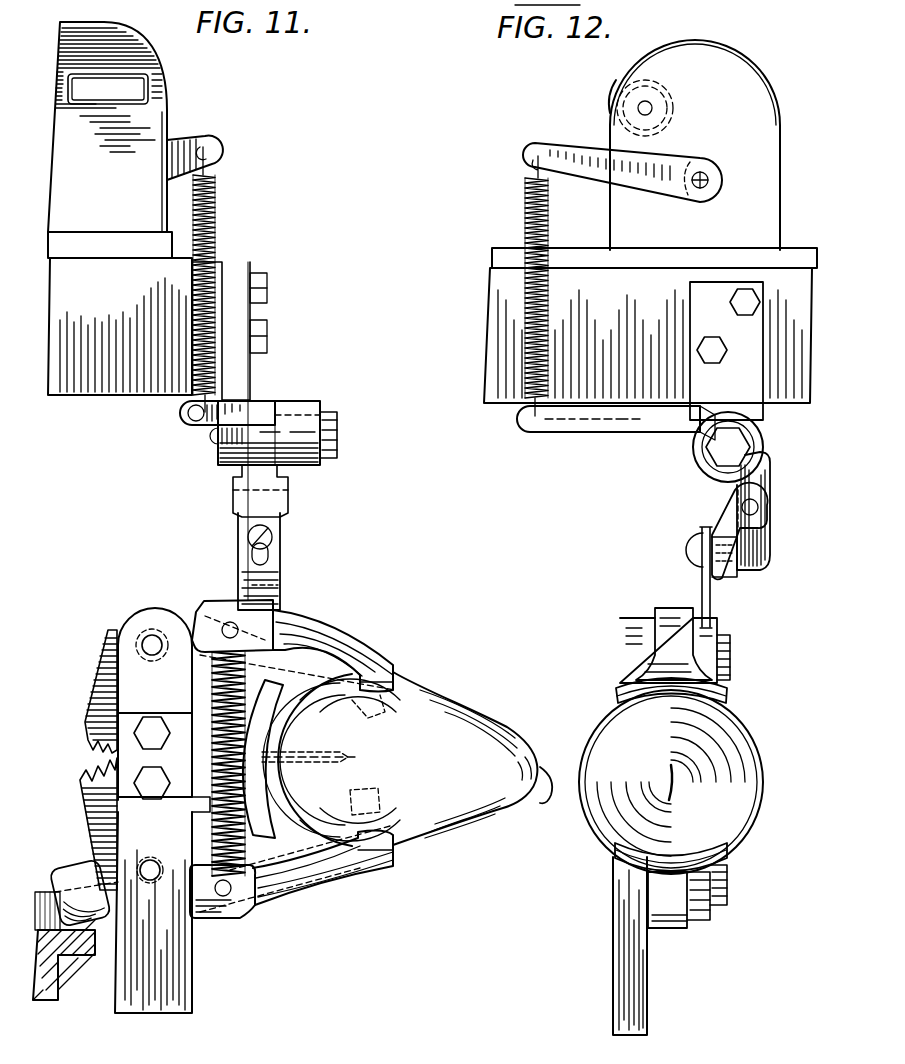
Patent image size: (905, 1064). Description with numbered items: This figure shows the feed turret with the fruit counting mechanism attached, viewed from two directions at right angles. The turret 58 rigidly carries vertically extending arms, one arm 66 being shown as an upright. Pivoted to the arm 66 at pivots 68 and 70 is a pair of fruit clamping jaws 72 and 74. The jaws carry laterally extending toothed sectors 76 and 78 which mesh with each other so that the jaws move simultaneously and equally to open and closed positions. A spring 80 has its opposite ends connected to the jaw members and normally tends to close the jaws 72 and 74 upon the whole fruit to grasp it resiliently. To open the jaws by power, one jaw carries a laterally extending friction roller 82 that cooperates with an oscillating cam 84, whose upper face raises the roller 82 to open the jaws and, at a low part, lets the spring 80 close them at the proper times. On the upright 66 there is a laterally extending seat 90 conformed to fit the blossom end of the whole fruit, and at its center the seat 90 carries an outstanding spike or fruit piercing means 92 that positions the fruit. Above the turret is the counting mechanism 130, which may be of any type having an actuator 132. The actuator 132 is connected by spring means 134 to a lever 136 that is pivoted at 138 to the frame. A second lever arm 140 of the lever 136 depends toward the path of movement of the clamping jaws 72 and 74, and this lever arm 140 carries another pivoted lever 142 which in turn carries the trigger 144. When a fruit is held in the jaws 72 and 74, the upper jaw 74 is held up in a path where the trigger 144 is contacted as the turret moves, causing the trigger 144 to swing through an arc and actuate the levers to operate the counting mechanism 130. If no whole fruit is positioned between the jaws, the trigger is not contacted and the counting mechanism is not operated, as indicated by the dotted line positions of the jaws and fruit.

In FIG. 11, the turret 58 is at (212, 1012).
In FIG. 11, the arm 66 is at (182, 973).
In FIG. 12, the arm 66 is at (628, 984).
In FIG. 11, the pivot 68 is at (150, 860).
In FIG. 11, the pivot 70 is at (152, 640).
In FIG. 11, the fruit clamping jaw 72 is at (313, 853).
In FIG. 12, the fruit clamping jaw 72 is at (660, 905).
In FIG. 11, the fruit clamping jaw 74 is at (327, 635).
In FIG. 12, the fruit clamping jaw 74 is at (672, 642).
In FIG. 11, the toothed sector 76 is at (94, 810).
In FIG. 11, the toothed sector 78 is at (86, 730).
In FIG. 11, the spring 80 is at (212, 765).
In FIG. 11, the friction roller 82 is at (62, 856).
In FIG. 11, the oscillating cam 84 is at (52, 998).
In FIG. 11, the seat 90 is at (265, 728).
In FIG. 11, the spike 92 is at (340, 757).
In FIG. 11, the counting mechanism 130 is at (145, 110).
In FIG. 12, the counting mechanism 130 is at (747, 77).
In FIG. 11, the actuator 132 is at (215, 152).
In FIG. 12, the actuator 132 is at (565, 150).
In FIG. 11, the spring means 134 is at (215, 218).
In FIG. 12, the spring means 134 is at (525, 215).
In FIG. 11, the lever 136 is at (192, 422).
In FIG. 12, the lever 136 is at (542, 433).
In FIG. 11, the pivot 138 is at (330, 430).
In FIG. 12, the pivot 138 is at (718, 457).
In FIG. 11, the lever arm 140 is at (268, 470).
In FIG. 12, the lever arm 140 is at (760, 538).
In FIG. 11, the pivoted lever 142 is at (282, 512).
In FIG. 12, the pivoted lever 142 is at (723, 575).
In FIG. 11, the trigger 144 is at (272, 578).
In FIG. 12, the trigger 144 is at (702, 592).